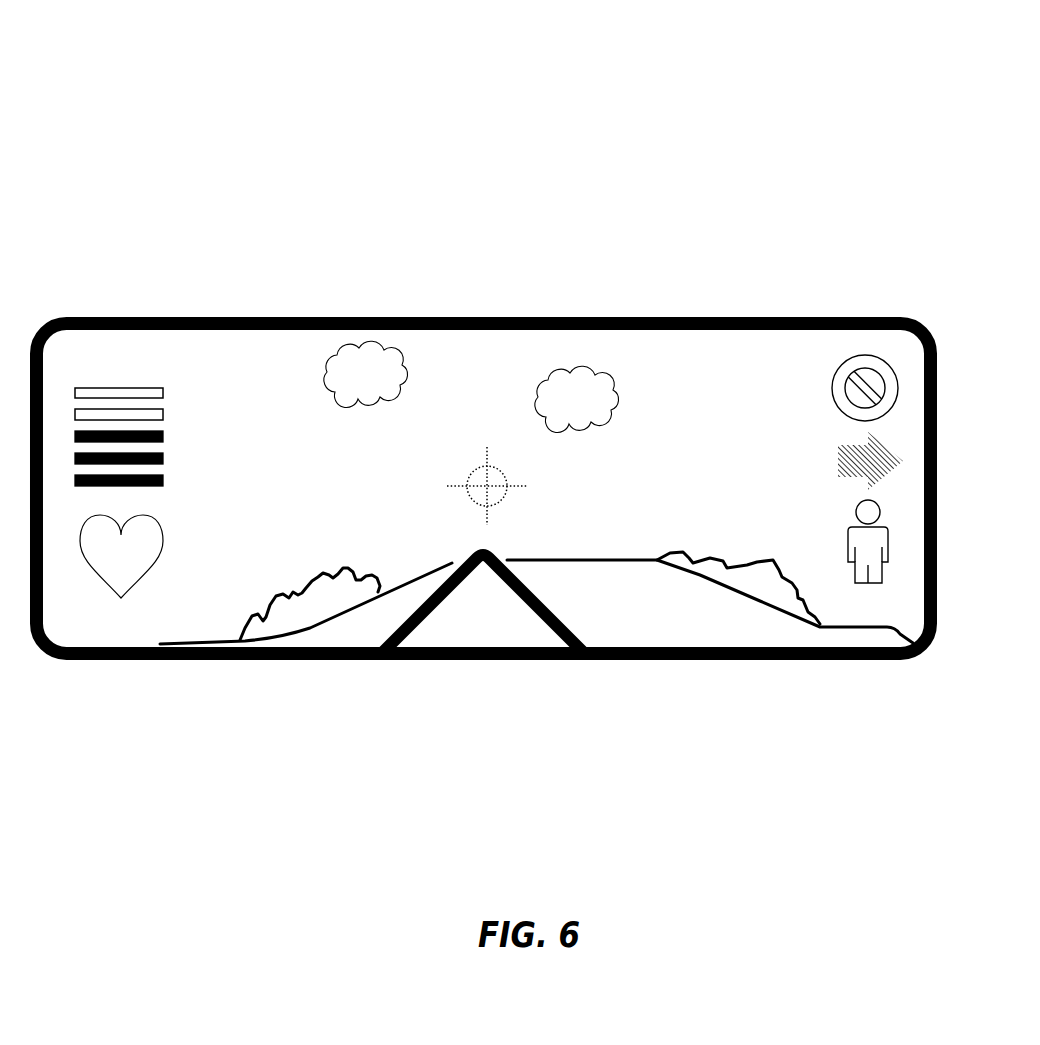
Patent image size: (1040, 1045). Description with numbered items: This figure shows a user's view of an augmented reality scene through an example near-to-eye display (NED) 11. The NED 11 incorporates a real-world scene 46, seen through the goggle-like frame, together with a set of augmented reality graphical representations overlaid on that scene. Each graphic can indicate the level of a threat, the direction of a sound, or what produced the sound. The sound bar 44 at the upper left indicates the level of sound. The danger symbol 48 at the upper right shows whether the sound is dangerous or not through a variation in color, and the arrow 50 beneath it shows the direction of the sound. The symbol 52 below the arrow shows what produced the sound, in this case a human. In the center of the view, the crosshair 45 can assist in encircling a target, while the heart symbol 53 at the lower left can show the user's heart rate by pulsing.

The near-to-eye display 11 is at (748, 146).
The sound bar 44 is at (110, 388).
The crosshair 45 is at (508, 500).
The real-world scene 46 is at (448, 422).
The danger symbol 48 is at (865, 355).
The arrow 50 is at (897, 455).
The symbol 52 is at (898, 542).
The heart symbol 53 is at (132, 587).